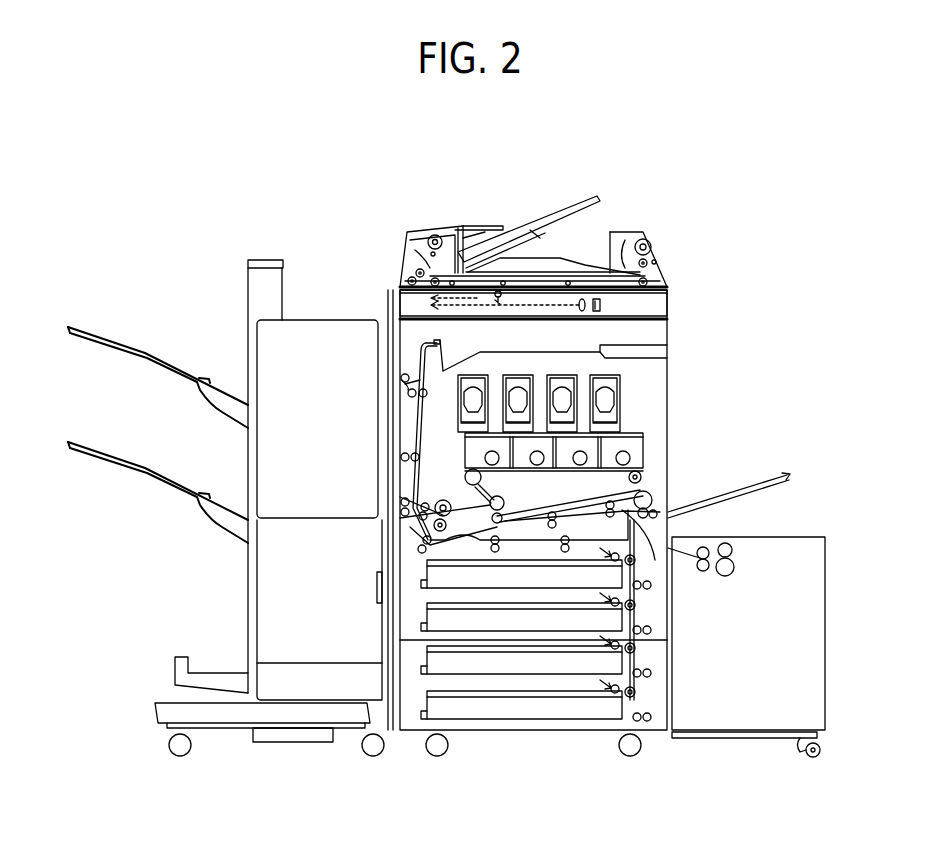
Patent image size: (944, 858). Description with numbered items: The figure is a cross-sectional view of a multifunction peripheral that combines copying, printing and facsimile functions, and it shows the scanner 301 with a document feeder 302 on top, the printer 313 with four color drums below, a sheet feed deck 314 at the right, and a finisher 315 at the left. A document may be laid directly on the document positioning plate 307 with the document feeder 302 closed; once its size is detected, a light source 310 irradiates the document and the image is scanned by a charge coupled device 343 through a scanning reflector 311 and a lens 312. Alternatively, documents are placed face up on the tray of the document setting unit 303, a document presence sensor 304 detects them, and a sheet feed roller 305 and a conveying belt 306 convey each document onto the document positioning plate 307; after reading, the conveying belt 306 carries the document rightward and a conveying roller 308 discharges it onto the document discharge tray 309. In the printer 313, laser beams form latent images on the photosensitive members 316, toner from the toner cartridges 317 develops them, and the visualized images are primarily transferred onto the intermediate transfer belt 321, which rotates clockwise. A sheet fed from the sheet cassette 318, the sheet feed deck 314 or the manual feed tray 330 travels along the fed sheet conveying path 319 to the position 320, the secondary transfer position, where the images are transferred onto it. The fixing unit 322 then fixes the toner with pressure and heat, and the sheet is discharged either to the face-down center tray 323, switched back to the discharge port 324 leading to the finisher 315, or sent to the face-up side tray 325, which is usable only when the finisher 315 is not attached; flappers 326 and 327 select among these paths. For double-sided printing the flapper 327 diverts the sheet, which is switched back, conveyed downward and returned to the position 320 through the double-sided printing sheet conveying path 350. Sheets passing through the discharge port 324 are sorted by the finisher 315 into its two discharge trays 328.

The scanner 301 is at (663, 297).
The document feeder 302 is at (405, 245).
The document setting unit 303 is at (532, 226).
The document presence sensor 304 is at (467, 227).
The sheet feed roller 305 is at (435, 235).
The conveying belt 306 is at (522, 279).
The document positioning plate 307 is at (640, 308).
The conveying roller 308 is at (655, 245).
The document discharge tray 309 is at (567, 258).
The light source 310 is at (498, 300).
The scanning reflector 311 is at (403, 293).
The lens 312 is at (645, 362).
The printer 313 is at (655, 735).
The sheet feed deck 314 is at (825, 575).
The finisher 315 is at (260, 338).
The photosensitive members 316 is at (537, 460).
The toner cartridges 317 is at (518, 400).
The sheet cassette 318 is at (522, 595).
The fed sheet conveying path 319 is at (648, 614).
The position 320 is at (492, 512).
The intermediate transfer belt 321 is at (645, 490).
The fixing unit 322 is at (422, 538).
The face-down center tray 323 is at (420, 350).
The discharge port 324 is at (403, 378).
The side tray 325 is at (400, 497).
The flapper 326 is at (420, 390).
The flapper 327 is at (405, 498).
The discharge trays 328 is at (146, 352).
The manual feed tray 330 is at (790, 475).
The charge coupled device 343 is at (660, 345).
The double-sided printing sheet conveying path 350 is at (537, 540).